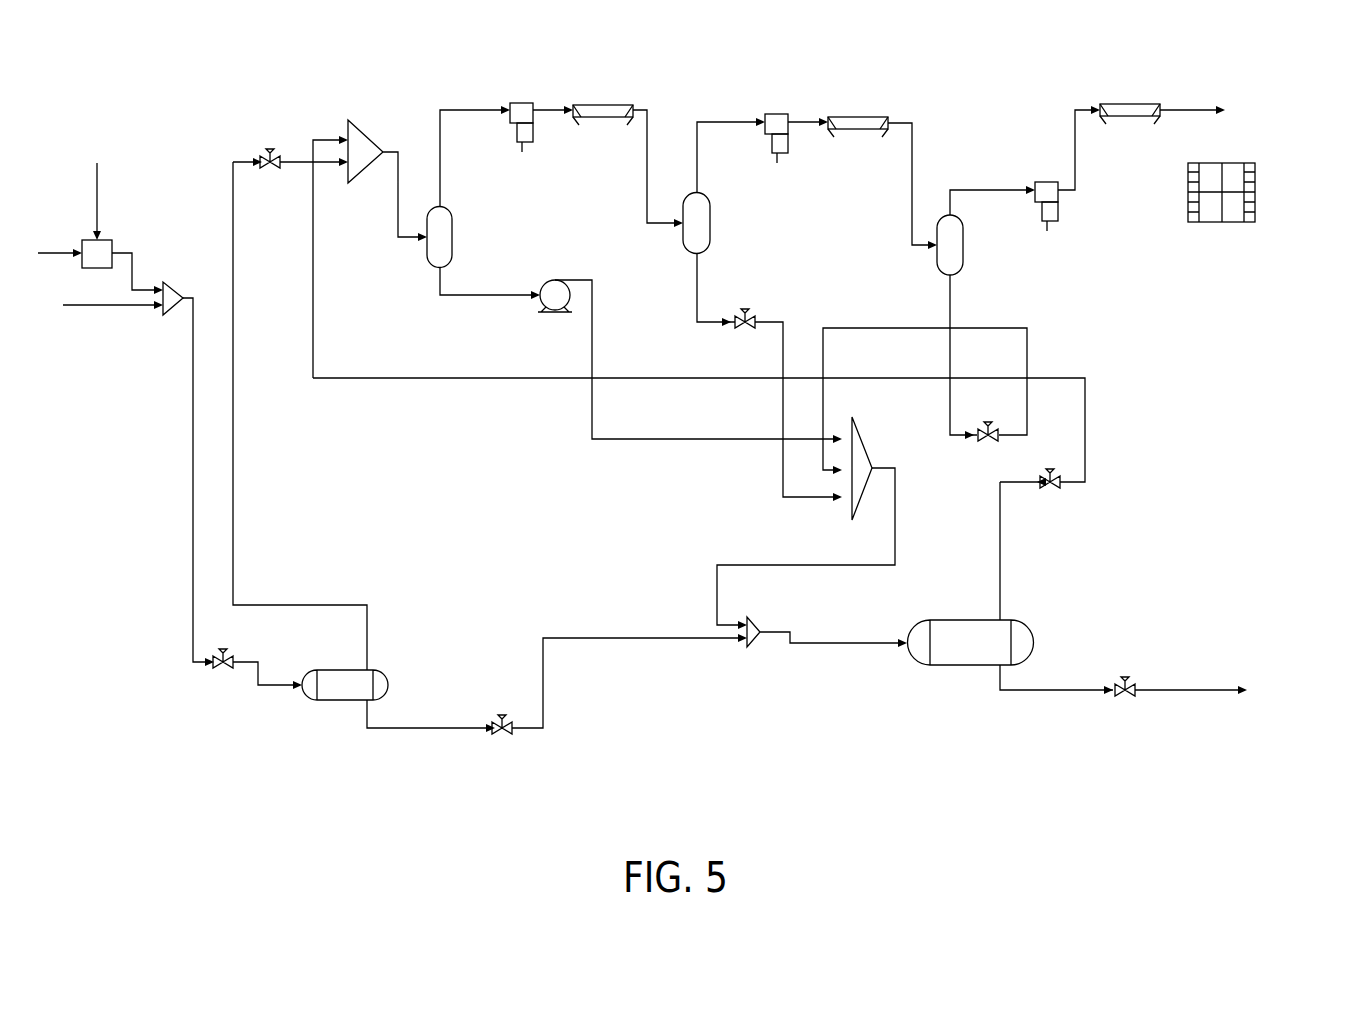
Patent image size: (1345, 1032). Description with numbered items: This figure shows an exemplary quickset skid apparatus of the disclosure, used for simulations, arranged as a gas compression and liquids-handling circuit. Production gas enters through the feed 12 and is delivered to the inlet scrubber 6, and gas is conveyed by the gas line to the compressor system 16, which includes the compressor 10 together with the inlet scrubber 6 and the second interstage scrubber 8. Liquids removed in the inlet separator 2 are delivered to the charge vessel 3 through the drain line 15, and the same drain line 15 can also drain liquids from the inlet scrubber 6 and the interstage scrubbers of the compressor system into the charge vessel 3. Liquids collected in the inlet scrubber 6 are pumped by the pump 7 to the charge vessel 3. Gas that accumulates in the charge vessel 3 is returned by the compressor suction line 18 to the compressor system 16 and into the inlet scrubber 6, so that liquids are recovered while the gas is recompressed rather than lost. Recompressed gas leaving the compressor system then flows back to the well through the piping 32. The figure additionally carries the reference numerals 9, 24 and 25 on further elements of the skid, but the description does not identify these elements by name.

The inlet separator 2 is at (340, 700).
The charge vessel 3 is at (960, 665).
The inlet scrubber 6 is at (452, 234).
The pump 7 is at (540, 285).
The second interstage scrubber 8 is at (710, 229).
The third compression stage separator 9 is at (963, 250).
The compressor 10 is at (1257, 215).
The feed 12 is at (193, 470).
The drain line 15 is at (895, 540).
The compressor system 16 is at (240, 465).
The compressor suction line 18 is at (998, 518).
The control valve 24 is at (1125, 675).
The product outlet line 25 is at (1195, 690).
The piping 32 is at (1196, 110).